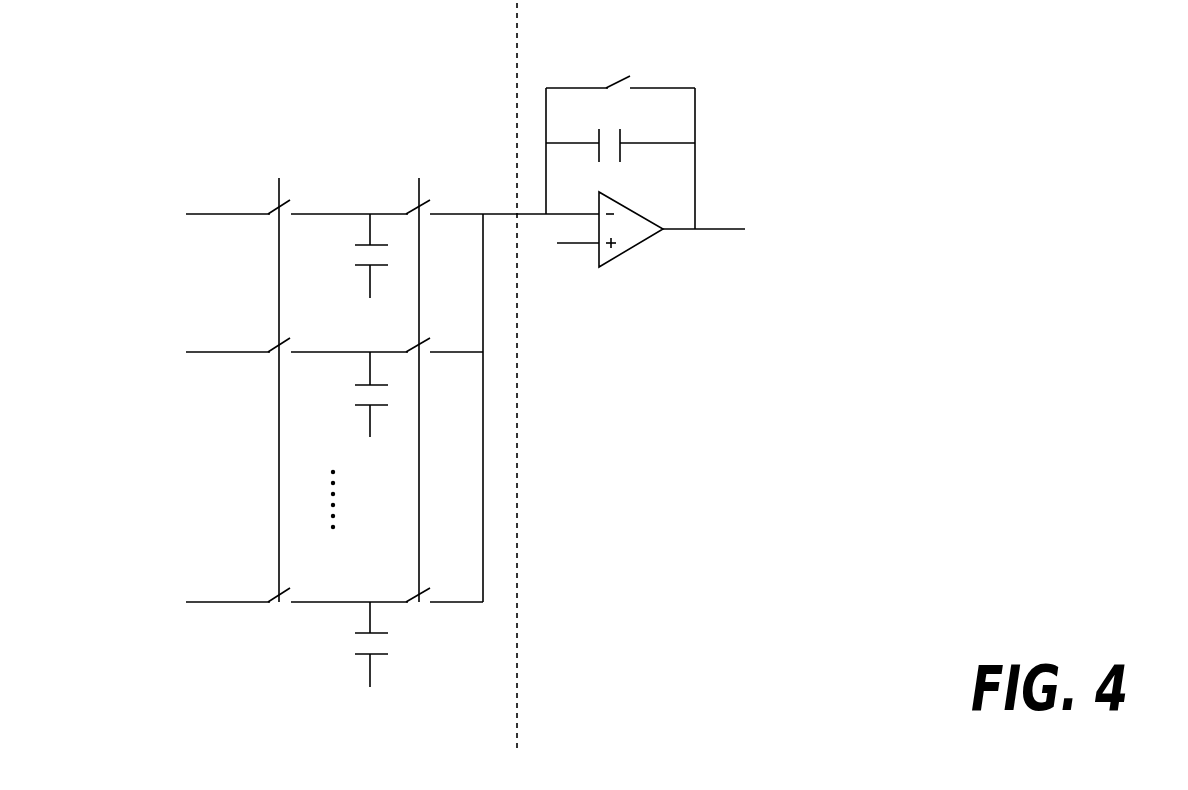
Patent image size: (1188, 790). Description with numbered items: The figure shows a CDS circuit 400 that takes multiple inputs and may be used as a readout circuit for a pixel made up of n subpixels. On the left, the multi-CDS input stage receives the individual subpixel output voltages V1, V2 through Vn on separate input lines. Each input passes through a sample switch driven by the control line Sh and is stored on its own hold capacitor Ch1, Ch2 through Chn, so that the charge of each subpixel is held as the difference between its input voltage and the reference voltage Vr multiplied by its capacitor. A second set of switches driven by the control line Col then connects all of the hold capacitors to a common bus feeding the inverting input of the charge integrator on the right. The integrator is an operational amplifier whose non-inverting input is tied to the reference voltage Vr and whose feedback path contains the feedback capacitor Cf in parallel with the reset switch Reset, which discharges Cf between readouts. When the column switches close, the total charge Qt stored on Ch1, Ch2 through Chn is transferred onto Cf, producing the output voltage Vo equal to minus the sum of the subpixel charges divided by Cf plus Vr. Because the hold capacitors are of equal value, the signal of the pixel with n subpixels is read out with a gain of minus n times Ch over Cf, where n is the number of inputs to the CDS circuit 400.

The CDS circuit 400 is at (554, 376).
The Sh switch control line Sh is at (276, 365).
The Col switch control line Col is at (416, 365).
The first input voltage V1 is at (223, 235).
The second input voltage V2 is at (223, 373).
The n-th input voltage Vn is at (225, 623).
The first hold capacitor Ch1 is at (350, 256).
The second hold capacitor Ch2 is at (349, 394).
The n-th hold capacitor Chn is at (350, 644).
The reset switch Reset is at (620, 65).
The feedback capacitor Cf is at (620, 134).
The reference voltage Vr is at (567, 261).
The output voltage Vo is at (713, 250).